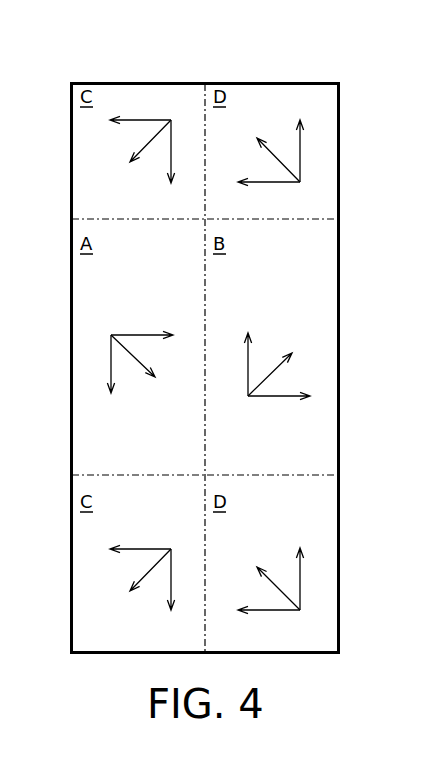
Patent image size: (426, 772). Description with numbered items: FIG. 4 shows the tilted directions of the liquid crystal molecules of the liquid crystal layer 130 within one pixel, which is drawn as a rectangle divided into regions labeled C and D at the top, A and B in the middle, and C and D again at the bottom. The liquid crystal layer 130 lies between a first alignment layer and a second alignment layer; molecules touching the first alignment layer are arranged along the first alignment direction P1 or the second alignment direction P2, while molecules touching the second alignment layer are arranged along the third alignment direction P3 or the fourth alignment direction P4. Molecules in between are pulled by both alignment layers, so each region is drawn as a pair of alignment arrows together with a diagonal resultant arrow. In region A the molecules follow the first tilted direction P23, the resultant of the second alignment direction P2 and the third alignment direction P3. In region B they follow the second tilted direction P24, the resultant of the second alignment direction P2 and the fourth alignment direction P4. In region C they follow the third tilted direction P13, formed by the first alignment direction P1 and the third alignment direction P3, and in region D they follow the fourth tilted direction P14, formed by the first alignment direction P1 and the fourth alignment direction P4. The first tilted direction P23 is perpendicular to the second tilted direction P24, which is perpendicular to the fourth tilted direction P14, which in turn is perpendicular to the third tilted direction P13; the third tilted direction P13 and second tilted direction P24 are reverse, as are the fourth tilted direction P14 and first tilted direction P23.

The liquid crystal layer 130 is at (397, 56).
The first alignment direction P1 is at (141, 120).
The second alignment direction P2 is at (140, 333).
The third alignment direction P3 is at (172, 157).
The fourth alignment direction P4 is at (300, 148).
The third tilted direction P13 is at (150, 139).
The fourth tilted direction P14 is at (281, 160).
The first tilted direction P23 is at (132, 353).
The second tilted direction P24 is at (272, 375).